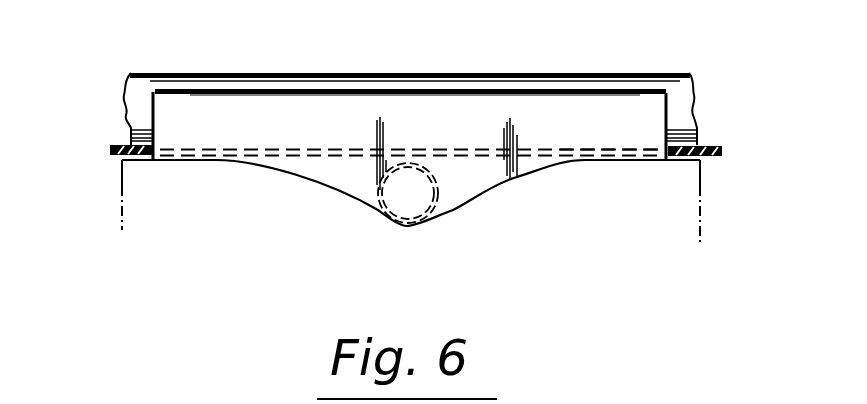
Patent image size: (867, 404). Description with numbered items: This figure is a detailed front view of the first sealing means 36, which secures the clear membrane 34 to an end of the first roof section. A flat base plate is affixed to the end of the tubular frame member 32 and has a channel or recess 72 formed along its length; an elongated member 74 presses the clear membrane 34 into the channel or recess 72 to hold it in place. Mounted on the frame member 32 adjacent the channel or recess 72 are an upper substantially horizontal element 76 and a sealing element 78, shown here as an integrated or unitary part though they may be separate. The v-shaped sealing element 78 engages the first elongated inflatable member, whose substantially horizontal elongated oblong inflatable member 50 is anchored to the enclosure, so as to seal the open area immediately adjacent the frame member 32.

The first sealing means 36 is at (361, 44).
The elongated member 74 is at (252, 78).
The clear membrane 34 is at (113, 147).
The substantially horizontal elongated oblong inflatable member 50 is at (701, 229).
The upper substantially horizontal element 76 is at (273, 151).
The channel or recess 72 is at (598, 150).
The sealing element 78 is at (499, 178).
The frame member 32 is at (432, 203).